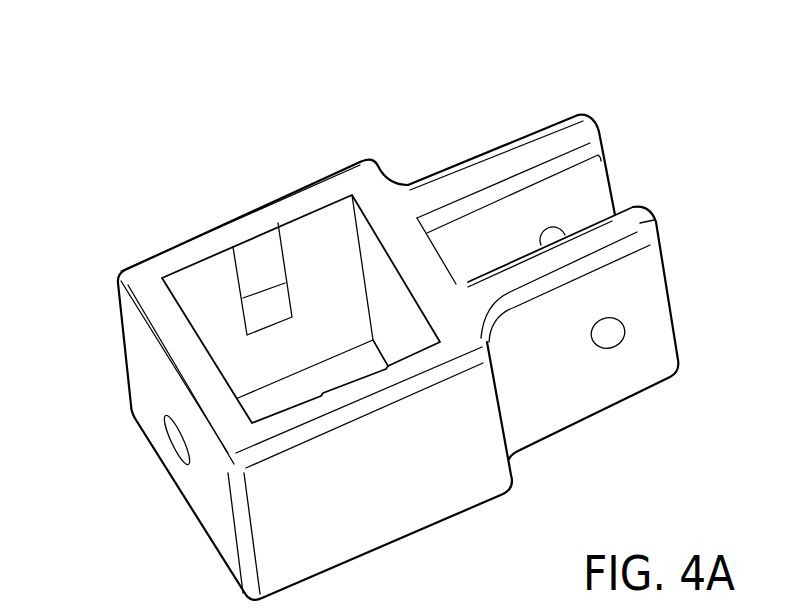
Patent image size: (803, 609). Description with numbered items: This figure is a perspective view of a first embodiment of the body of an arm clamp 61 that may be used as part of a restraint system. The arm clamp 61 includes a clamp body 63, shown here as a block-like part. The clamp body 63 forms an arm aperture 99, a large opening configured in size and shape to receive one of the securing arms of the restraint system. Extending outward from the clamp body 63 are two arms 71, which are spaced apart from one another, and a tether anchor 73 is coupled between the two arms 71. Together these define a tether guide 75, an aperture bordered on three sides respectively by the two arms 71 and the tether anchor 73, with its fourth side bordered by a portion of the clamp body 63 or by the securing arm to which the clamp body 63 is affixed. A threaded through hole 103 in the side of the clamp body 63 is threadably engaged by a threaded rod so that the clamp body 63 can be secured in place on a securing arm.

The arm clamp 61 is at (125, 136).
The clamp body 63 is at (117, 277).
The arm aperture 99 is at (350, 304).
The tether guide 75 is at (483, 248).
The outward-extending arms 71 is at (640, 216).
The tether anchor 73 is at (625, 330).
The threaded through hole 103 is at (165, 437).